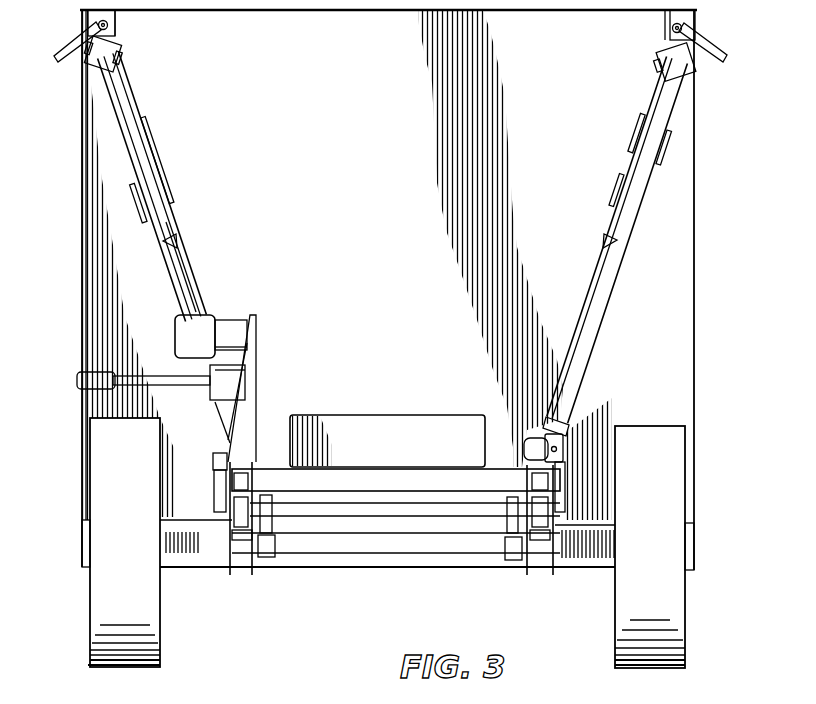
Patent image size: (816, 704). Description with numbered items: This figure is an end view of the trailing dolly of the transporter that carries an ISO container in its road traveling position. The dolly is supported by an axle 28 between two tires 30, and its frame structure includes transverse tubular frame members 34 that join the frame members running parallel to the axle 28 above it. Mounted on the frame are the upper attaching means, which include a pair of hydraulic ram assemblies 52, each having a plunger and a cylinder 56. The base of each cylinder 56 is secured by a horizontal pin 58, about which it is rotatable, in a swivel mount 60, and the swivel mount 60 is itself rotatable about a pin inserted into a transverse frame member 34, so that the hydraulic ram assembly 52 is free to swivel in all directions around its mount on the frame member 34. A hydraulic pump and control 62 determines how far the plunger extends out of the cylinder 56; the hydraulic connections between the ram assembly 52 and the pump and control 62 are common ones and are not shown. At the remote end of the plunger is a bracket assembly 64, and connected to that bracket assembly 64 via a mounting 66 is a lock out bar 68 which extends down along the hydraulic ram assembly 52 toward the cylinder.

The bracket assembly 64 is at (113, 17).
The mounting 66 is at (118, 60).
The lock out bar 68 is at (132, 110).
The hydraulic ram assembly 52 is at (178, 203).
The cylinder 56 is at (192, 290).
The hydraulic pump and control 62 is at (252, 350).
The swivel mount 60 is at (527, 447).
The horizontal pin 58 is at (562, 442).
The transverse tubular frame member 34 is at (553, 483).
The tire 30 is at (676, 497).
The axle 28 is at (437, 548).